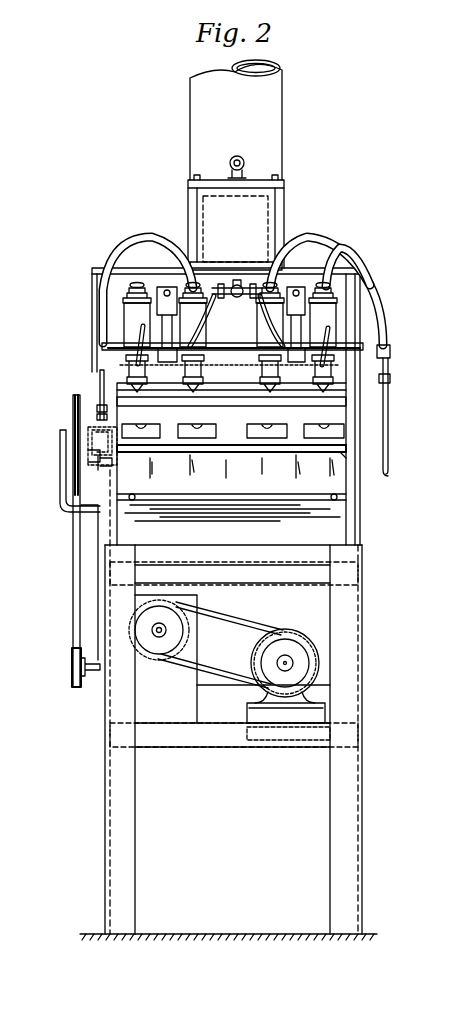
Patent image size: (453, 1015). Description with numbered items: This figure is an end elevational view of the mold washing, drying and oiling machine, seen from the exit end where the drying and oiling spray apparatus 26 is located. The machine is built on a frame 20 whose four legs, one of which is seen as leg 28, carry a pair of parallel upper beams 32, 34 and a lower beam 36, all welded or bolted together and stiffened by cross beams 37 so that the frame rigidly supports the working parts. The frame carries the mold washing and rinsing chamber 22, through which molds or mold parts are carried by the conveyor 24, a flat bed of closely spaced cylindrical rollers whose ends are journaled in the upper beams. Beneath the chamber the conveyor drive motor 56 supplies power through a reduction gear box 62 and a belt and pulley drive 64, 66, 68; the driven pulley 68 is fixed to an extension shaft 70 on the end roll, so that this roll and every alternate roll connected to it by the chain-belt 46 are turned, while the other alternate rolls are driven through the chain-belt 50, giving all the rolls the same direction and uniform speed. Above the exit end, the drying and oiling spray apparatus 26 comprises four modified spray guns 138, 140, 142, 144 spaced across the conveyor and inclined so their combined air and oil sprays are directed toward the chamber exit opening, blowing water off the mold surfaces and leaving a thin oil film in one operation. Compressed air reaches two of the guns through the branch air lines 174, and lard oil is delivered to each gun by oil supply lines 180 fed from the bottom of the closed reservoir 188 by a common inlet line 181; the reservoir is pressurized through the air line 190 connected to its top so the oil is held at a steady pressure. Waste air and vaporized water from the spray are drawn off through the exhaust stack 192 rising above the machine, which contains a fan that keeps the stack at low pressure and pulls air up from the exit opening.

The frame 20 is at (363, 607).
The mold washing and rinsing chamber 22 is at (352, 415).
The conveyor 24 is at (340, 455).
The drying and oiling spray apparatus 26 is at (101, 315).
The leg 28 is at (128, 866).
The upper beam 32 is at (360, 438).
The upper beam 34 is at (107, 455).
The lower beam 36 is at (250, 740).
The cross beams 37 is at (263, 577).
The chain-belt 46 is at (112, 465).
The chain-belt 50 is at (100, 470).
The conveyor drive motor 56 is at (318, 660).
The reduction gear box 62 is at (180, 716).
The belt and pulley drive 64 is at (72, 652).
The belt and pulley drive 66 is at (72, 582).
The driven pulley 68 is at (72, 405).
The extension shaft 70 is at (60, 440).
The spray gun 138 is at (128, 332).
The spray gun 140 is at (183, 285).
The spray gun 142 is at (281, 292).
The spray gun 144 is at (335, 316).
The branch air lines 174 is at (125, 265).
The oil supply lines 180 is at (135, 338).
The common inlet line 181 is at (236, 290).
The reservoir 188 is at (263, 215).
The air line 190 is at (245, 162).
The exhaust stack 192 is at (270, 107).